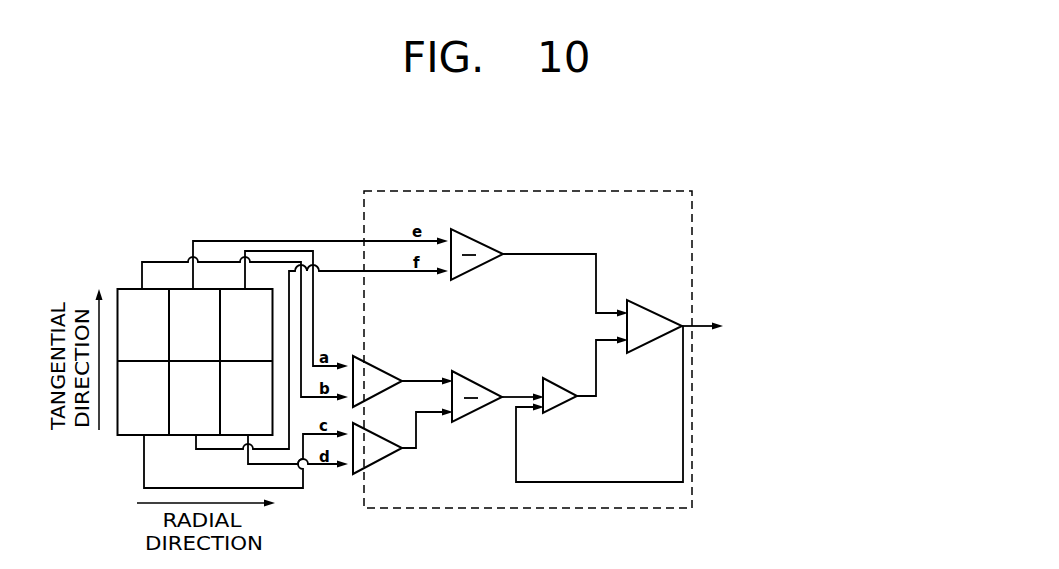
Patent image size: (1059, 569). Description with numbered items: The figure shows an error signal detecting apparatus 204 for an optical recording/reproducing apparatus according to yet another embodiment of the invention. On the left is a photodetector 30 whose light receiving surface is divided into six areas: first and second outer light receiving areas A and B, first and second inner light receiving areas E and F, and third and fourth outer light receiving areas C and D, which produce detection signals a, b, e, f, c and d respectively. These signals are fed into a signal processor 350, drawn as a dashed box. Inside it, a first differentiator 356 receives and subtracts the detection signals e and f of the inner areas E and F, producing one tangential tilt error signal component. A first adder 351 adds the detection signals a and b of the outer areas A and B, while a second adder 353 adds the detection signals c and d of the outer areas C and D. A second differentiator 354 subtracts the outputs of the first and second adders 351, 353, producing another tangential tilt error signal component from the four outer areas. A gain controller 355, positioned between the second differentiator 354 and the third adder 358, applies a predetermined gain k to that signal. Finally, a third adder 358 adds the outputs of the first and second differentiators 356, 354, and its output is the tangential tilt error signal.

The photodetector 30 is at (108, 278).
The error signal detecting apparatus 204 is at (765, 155).
The signal processor 350 is at (633, 190).
The first adder 351 is at (378, 362).
The second adder 353 is at (375, 456).
The second differentiator 354 is at (478, 381).
The gain controller 355 is at (557, 413).
The first differentiator 356 is at (473, 270).
The third adder 358 is at (650, 301).